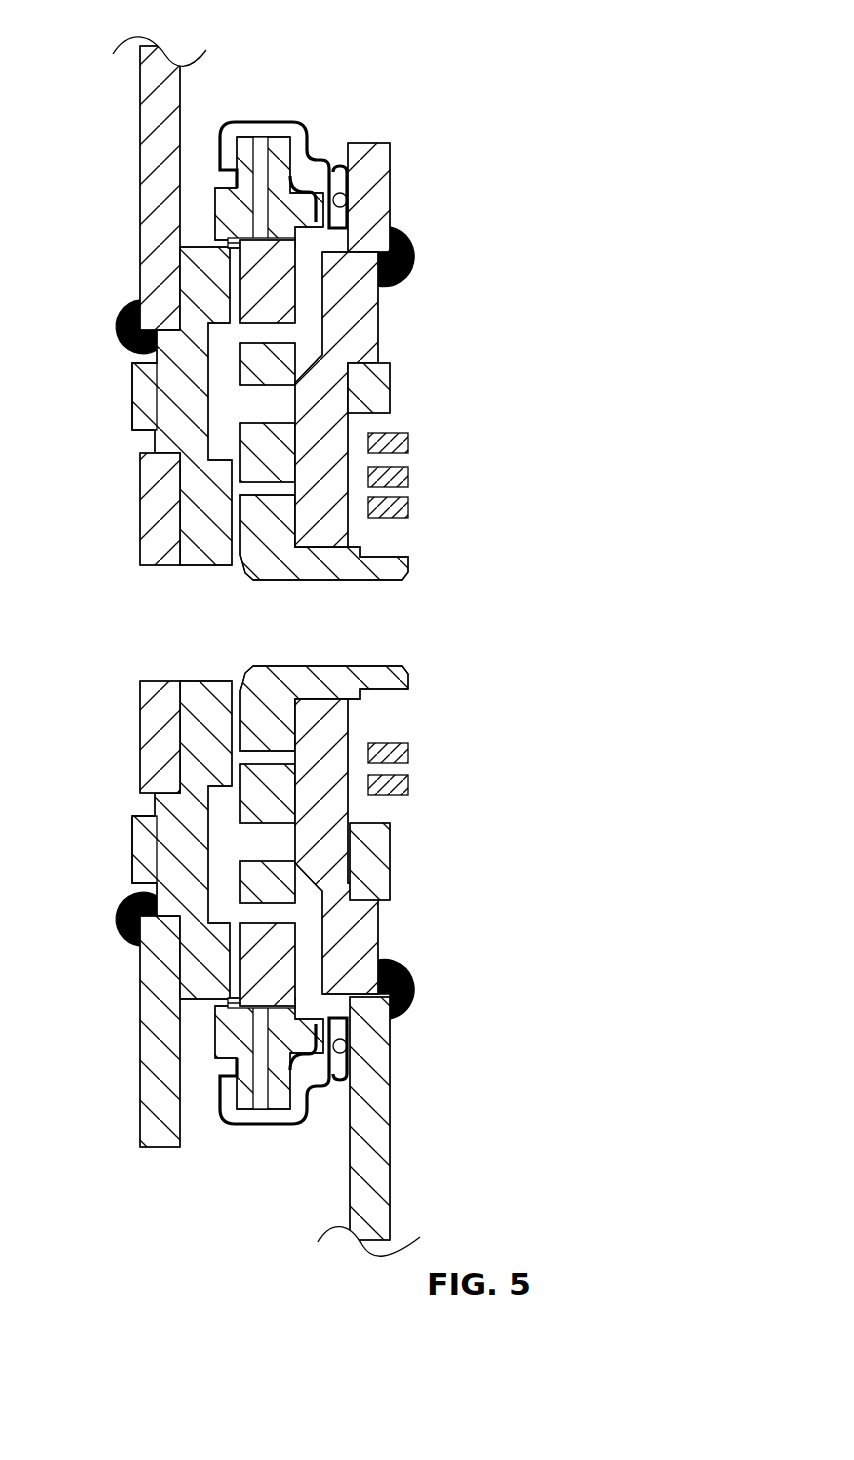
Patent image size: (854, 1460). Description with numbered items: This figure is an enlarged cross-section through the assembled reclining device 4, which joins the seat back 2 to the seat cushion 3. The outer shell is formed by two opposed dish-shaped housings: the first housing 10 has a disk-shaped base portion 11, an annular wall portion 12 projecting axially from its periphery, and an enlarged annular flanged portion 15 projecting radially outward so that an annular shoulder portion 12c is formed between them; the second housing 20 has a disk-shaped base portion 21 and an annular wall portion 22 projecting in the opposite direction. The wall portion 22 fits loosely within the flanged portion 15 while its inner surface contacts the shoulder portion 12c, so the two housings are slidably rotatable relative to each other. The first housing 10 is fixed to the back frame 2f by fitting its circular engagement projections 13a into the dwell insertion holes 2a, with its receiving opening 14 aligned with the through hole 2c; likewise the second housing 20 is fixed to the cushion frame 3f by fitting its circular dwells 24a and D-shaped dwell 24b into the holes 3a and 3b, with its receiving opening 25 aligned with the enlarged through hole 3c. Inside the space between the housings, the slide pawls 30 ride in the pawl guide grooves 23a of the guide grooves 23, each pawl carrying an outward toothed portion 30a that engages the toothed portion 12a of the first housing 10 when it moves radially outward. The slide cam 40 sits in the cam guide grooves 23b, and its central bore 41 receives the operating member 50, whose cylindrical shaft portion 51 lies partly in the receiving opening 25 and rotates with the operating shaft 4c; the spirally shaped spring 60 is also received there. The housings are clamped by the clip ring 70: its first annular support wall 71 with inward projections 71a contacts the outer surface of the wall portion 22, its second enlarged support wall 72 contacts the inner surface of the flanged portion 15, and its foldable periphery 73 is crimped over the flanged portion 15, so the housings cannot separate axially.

The seat back 2 is at (118, 588).
The back frame 2f is at (160, 118).
The circular dwell insertion holes 2a is at (154, 436).
The through hole 2c is at (164, 647).
The seat cushion 3 is at (395, 757).
The circular dwell insertion holes 3a is at (384, 345).
The D-shaped dwell insertion hole 3b is at (384, 909).
The enlarged through hole 3c is at (366, 420).
The cushion frame 3f is at (372, 1155).
The reclining device 4 is at (331, 72).
The operating shaft 4c is at (377, 537).
The first housing 10 is at (197, 290).
The base portion 11 is at (202, 497).
The annular wall portion 12 is at (298, 216).
The toothed portion 12a is at (241, 624).
The annular shoulder portion 12c is at (240, 217).
The circular engagement projections 13a is at (142, 388).
The receiving opening 14 is at (209, 601).
The enlarged annular flanged portion 15 is at (267, 163).
The second housing 20 is at (364, 226).
The base portion 21 is at (330, 474).
The annular wall portion 22 is at (332, 218).
The guide grooves 23 is at (383, 606).
The pawl guide grooves 23a is at (296, 376).
The cam guide grooves 23b is at (292, 726).
The circular engagement projections 24a is at (363, 300).
The D-shaped engagement projection 24b is at (361, 948).
The receiving opening 25 is at (329, 616).
The slide pawls 30 is at (398, 262).
The toothed portion 30a is at (257, 237).
The slide cam 40 is at (280, 798).
The bore 41 is at (264, 741).
The operating member 50 is at (343, 566).
The cylindrical shaft portion 51 is at (390, 570).
The spirally shaped spring 60 is at (393, 510).
The clip ring 70 is at (325, 160).
The first annular support wall 71 is at (334, 206).
The projections 71a is at (347, 212).
The second enlarged annular support wall 72 is at (288, 141).
The foldable annular periphery 73 is at (226, 150).